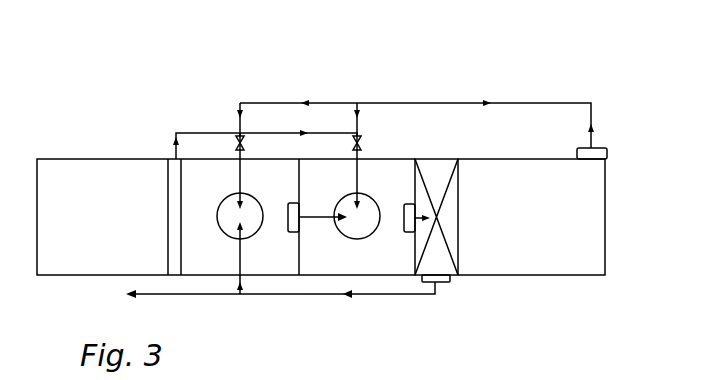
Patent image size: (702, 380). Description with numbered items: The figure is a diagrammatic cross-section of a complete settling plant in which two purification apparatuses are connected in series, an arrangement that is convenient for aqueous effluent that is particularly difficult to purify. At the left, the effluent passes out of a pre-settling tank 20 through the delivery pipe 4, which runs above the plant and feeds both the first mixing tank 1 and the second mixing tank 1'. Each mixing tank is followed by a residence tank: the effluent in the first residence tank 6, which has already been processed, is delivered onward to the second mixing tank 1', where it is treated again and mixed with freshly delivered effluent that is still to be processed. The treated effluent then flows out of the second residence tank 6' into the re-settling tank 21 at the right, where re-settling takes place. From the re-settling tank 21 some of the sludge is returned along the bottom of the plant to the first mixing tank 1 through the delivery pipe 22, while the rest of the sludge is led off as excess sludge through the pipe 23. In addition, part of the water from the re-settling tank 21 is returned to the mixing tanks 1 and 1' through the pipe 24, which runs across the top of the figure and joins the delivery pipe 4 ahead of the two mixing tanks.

The pre-settling tank 20 is at (77, 168).
The re-settling tank 21 is at (535, 268).
The first residence tank 6 is at (233, 244).
The second residence tank 6' is at (357, 247).
The first mixing tank 1 is at (248, 226).
The second mixing tank 1' is at (367, 199).
The delivery pipe 4 is at (200, 130).
The pipe 24 is at (530, 102).
The pipe 23 is at (197, 297).
The delivery pipe 22 is at (330, 296).